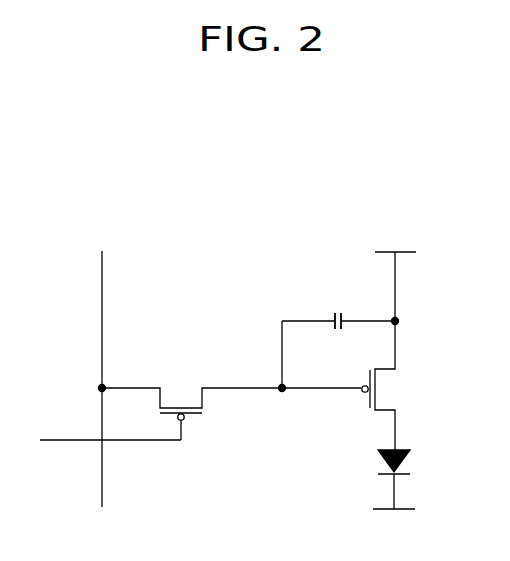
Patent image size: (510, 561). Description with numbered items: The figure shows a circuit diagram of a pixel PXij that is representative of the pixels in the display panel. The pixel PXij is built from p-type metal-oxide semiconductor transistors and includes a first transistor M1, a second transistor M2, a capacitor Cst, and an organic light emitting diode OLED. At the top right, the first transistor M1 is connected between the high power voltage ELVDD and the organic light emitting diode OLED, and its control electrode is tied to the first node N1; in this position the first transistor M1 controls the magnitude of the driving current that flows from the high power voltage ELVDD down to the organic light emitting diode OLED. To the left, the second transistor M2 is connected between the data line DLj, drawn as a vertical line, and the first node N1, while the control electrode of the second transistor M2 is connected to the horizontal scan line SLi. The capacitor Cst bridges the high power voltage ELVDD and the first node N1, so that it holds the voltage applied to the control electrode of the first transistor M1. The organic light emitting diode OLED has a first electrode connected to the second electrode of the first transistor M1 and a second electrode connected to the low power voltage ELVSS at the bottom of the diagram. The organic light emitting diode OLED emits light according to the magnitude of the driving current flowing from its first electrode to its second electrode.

The pixel PXij is at (260, 172).
The data line DLj is at (102, 367).
The scan line SLi is at (92, 439).
The second transistor M2 is at (192, 408).
The first transistor M1 is at (383, 385).
The first node N1 is at (316, 369).
The capacitor Cst is at (338, 307).
The high power voltage ELVDD is at (396, 274).
The low power voltage ELVSS is at (391, 523).
The organic light emitting diode OLED is at (418, 479).